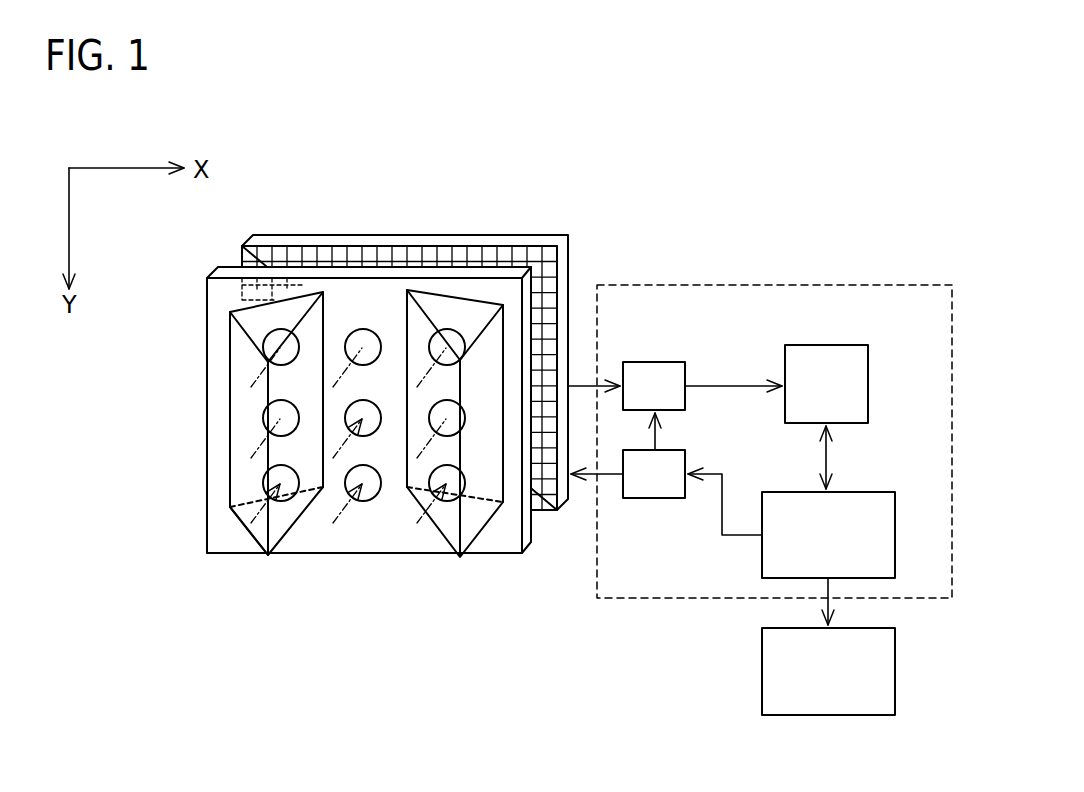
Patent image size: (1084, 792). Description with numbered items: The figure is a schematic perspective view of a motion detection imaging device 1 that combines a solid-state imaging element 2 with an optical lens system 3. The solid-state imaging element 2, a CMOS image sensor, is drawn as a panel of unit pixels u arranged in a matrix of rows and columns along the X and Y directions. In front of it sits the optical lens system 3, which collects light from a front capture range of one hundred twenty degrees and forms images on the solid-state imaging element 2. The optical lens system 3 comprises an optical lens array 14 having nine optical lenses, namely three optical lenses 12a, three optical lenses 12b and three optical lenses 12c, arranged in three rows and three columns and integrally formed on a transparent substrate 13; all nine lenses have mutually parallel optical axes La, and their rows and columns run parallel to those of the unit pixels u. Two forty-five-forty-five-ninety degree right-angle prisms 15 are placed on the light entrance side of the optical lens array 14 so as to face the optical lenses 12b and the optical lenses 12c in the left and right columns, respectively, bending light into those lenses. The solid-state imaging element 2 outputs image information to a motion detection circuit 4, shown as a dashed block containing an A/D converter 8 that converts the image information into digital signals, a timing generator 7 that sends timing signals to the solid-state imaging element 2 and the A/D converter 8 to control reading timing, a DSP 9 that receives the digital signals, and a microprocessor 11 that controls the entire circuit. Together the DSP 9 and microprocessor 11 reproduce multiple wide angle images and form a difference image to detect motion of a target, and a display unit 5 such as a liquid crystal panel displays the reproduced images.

The motion detection imaging device 1 is at (392, 163).
The solid-state imaging element 2 is at (252, 238).
The optical lens system 3 is at (311, 395).
The motion detection circuit 4 is at (912, 287).
The display unit 5 is at (870, 688).
The timing generator 7 is at (650, 492).
The A/D converter 8 is at (650, 362).
The DSP 9 is at (823, 356).
The microprocessor 11 is at (872, 518).
The optical lenses 12a is at (366, 332).
The optical lenses 12b is at (263, 399).
The optical lenses 12c is at (445, 500).
The transparent substrate 13 is at (240, 541).
The optical lens array 14 is at (208, 528).
The right-angle prisms 15 is at (252, 443).
The optical axes La is at (345, 510).
The unit pixels u is at (305, 246).